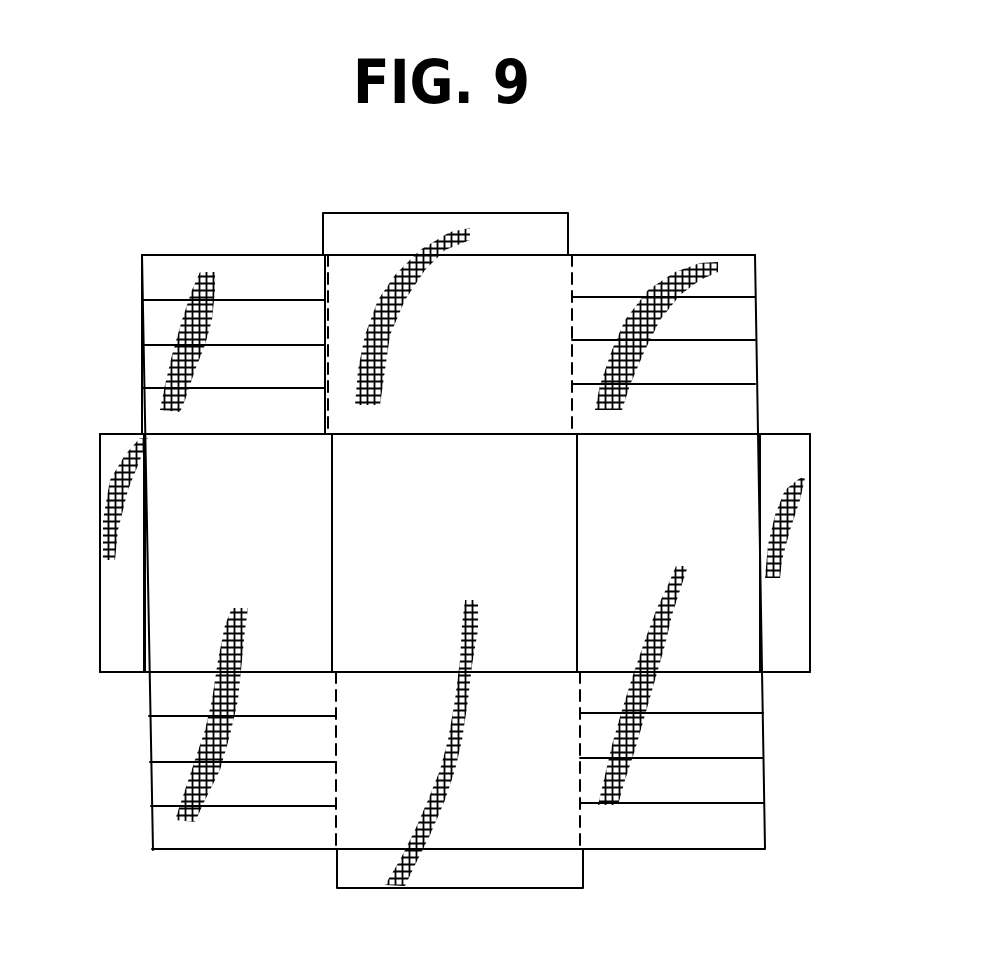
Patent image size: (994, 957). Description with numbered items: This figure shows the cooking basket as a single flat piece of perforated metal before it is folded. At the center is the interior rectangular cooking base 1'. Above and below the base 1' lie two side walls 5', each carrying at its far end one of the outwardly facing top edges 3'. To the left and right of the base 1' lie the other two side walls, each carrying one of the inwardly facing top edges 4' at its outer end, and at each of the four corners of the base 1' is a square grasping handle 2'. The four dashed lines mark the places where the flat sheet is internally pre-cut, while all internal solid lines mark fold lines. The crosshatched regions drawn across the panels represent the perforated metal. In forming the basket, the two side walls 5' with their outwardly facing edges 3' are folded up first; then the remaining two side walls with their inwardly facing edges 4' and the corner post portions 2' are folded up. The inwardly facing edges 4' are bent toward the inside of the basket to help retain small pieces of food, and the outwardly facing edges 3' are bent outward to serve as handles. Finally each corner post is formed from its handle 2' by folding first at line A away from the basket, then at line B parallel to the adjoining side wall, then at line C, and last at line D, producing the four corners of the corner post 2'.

The cooking base 1' is at (454, 553).
The grasping handles 2' is at (464, 521).
The outwardly facing top edges 3' is at (453, 555).
The inwardly facing top edges 4' is at (457, 553).
The side walls 5' is at (454, 552).
The fold line A is at (142, 433).
The fold line B is at (142, 387).
The fold line C is at (142, 344).
The fold line D is at (142, 298).